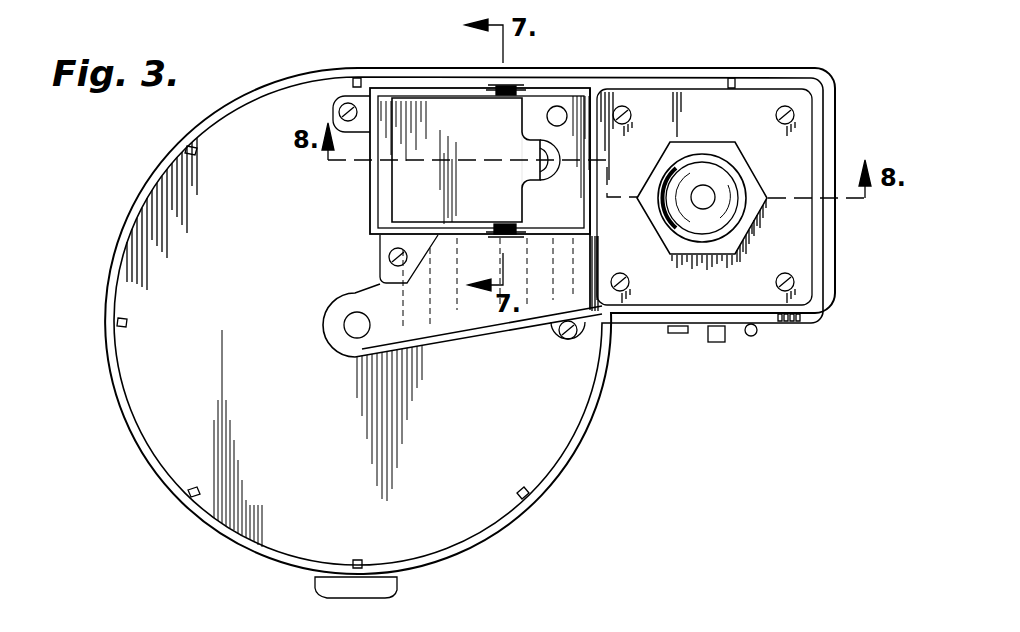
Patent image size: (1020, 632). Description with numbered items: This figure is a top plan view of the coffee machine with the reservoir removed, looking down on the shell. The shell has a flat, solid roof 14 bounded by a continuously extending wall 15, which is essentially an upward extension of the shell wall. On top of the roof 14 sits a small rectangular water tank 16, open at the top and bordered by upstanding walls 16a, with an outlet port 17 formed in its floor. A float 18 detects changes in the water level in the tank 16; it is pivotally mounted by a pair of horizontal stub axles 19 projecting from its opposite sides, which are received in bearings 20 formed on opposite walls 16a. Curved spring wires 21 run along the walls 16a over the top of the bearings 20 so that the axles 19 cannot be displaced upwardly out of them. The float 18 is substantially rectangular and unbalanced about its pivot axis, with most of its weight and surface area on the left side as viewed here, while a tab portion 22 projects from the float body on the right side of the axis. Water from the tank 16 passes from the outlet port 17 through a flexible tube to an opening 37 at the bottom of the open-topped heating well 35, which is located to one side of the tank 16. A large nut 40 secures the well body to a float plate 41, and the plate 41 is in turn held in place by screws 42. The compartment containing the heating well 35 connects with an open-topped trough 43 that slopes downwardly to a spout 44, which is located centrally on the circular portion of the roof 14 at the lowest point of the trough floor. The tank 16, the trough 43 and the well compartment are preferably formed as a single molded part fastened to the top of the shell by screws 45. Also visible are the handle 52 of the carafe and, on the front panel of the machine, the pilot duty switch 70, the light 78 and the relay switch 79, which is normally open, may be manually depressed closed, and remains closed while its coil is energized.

The roof 14 is at (468, 322).
The wall 15 is at (500, 532).
The water tank 16 is at (360, 235).
The upstanding walls 16a is at (368, 203).
The outlet port 17 is at (553, 118).
The float 18 is at (524, 196).
The stub axles 19 is at (505, 95).
The bearings 20 is at (505, 90).
The spring wires 21 is at (462, 97).
The tab portion 22 is at (542, 176).
The heating well 35 is at (708, 176).
The opening 37 is at (706, 203).
The nut 40 is at (683, 142).
The float plate 41 is at (798, 246).
The screws 42 is at (781, 124).
The trough 43 is at (437, 316).
The spout 44 is at (355, 325).
The screws 45 is at (338, 107).
The handle 52 is at (392, 586).
The switch 70 is at (676, 336).
The light 78 is at (753, 338).
The relay switch 79 is at (716, 344).